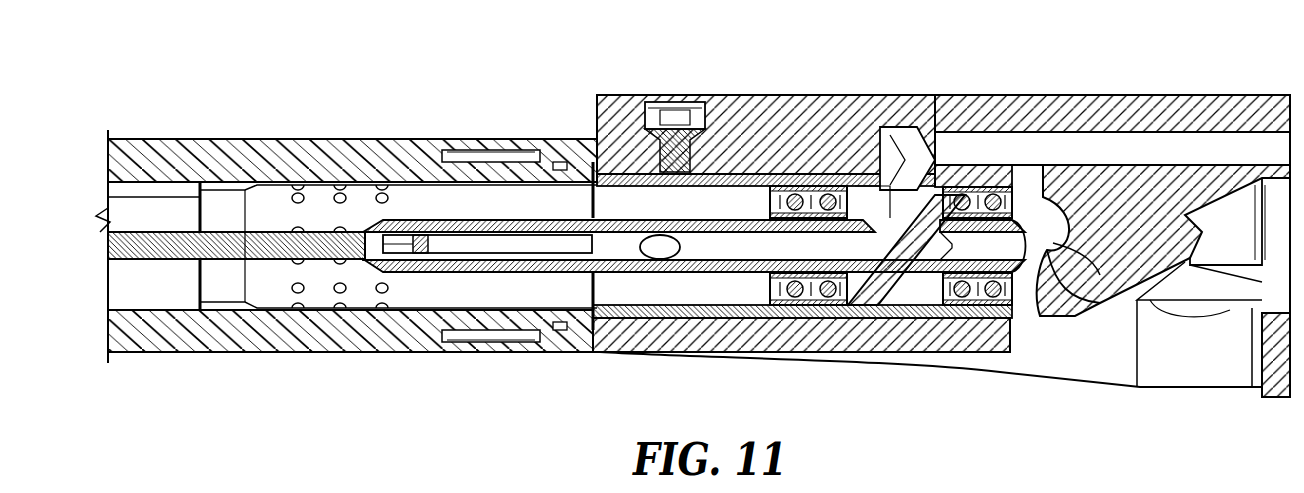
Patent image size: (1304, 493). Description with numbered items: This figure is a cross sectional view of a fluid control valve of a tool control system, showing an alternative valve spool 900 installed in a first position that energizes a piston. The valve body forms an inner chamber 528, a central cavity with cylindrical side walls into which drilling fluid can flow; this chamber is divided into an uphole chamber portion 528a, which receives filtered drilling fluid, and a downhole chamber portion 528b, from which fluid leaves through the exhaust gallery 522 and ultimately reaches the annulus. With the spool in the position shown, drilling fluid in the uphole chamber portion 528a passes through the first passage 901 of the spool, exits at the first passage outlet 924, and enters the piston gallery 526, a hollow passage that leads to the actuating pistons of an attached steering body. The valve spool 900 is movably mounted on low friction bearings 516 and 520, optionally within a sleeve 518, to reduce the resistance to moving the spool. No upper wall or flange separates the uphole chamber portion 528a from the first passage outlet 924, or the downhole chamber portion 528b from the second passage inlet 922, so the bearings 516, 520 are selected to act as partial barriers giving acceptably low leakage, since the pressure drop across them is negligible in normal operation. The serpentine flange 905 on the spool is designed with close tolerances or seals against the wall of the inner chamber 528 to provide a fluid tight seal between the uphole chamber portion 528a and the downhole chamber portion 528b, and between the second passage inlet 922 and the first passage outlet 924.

The valve spool 900 is at (443, 221).
The first passage 901 is at (780, 250).
The inner chamber 528 is at (650, 202).
The uphole chamber portion 528a is at (678, 292).
The downhole chamber portion 528b is at (1095, 250).
The sleeve 518 is at (813, 190).
The bearing 516 is at (813, 305).
The bearing 520 is at (978, 306).
The exhaust gallery 522 is at (1040, 282).
The second passage inlet 922 is at (898, 268).
The first passage outlet 924 is at (890, 203).
The serpentine flange 905 is at (917, 190).
The piston gallery 526 is at (940, 145).